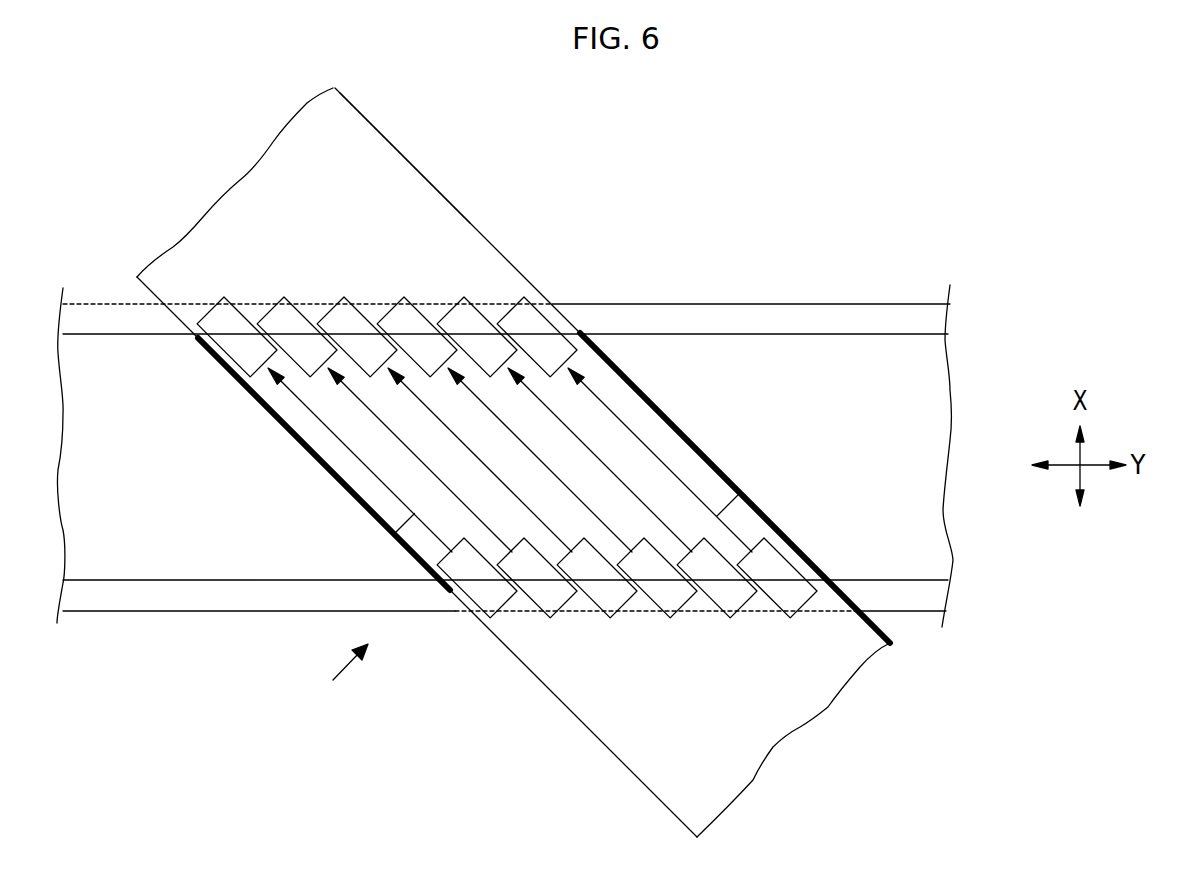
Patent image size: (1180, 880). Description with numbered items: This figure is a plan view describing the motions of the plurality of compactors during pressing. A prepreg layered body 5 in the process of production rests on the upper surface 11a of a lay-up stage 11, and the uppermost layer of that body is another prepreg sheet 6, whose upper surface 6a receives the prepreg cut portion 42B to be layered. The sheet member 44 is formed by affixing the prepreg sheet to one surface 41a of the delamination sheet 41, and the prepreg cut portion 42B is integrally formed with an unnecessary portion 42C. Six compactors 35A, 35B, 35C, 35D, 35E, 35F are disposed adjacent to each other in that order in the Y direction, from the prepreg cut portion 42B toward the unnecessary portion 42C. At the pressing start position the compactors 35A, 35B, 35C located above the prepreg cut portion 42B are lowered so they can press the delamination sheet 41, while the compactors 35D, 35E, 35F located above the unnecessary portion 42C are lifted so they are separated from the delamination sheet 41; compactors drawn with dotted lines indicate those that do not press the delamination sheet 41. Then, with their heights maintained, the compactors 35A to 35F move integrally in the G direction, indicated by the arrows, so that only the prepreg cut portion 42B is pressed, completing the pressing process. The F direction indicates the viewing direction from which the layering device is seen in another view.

The prepreg layered body 5 is at (881, 326).
The another prepreg sheet 6 is at (989, 456).
The upper surface 6a is at (920, 382).
The lay-up stage 11 is at (807, 316).
The upper surface 11a is at (752, 316).
The delamination sheet 41 is at (248, 189).
The one surface 41a is at (213, 233).
The sheet member 44 is at (405, 146).
The prepreg cut portion 42B is at (603, 358).
The unnecessary portion 42C is at (240, 386).
The compactor 35A is at (823, 580).
The compactor 35B is at (793, 595).
The compactor 35C is at (675, 597).
The compactor 35D is at (600, 595).
The compactor 35E is at (542, 593).
The compactor 35F is at (475, 587).
The G direction G is at (395, 531).
The F direction F is at (340, 675).